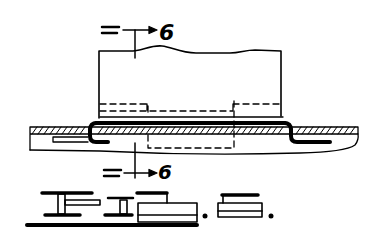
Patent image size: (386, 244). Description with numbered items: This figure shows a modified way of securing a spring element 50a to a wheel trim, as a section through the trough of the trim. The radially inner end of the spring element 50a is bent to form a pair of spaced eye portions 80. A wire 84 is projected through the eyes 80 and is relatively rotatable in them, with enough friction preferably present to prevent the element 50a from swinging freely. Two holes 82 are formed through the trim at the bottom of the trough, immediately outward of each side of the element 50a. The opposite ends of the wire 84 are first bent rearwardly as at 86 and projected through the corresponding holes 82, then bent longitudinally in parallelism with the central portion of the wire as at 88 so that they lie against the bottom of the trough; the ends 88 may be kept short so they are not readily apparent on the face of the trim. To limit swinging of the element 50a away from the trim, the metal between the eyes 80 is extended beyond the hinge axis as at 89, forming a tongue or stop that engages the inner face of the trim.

The spring element 50a is at (265, 63).
The eye portions 80 is at (112, 142).
The holes 82 is at (92, 140).
The wire 84 is at (285, 111).
The rearwardly bent portions 86 is at (96, 120).
The ends 88 is at (48, 154).
The tongue or stop 89 is at (188, 148).